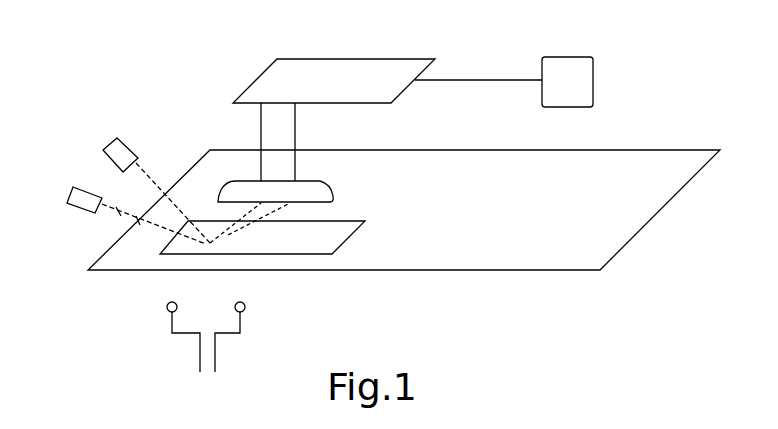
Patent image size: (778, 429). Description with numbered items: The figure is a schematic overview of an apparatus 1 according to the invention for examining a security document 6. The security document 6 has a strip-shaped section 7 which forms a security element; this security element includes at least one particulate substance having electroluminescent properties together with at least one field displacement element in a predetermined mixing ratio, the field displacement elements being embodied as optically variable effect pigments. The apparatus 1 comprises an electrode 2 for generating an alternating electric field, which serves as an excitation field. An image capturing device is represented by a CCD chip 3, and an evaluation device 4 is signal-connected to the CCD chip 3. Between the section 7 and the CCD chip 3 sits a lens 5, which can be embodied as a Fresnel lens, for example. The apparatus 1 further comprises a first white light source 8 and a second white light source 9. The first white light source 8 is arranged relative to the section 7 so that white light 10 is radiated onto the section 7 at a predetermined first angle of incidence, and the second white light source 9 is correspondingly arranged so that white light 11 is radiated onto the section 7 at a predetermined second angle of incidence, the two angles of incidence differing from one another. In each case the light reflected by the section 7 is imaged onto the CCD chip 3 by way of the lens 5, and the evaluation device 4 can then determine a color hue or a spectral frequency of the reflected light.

The apparatus 1 is at (105, 297).
The electrode 2 is at (217, 355).
The CCD chip 3 is at (403, 57).
The evaluation device 4 is at (594, 72).
The lens 5 is at (333, 190).
The security document 6 is at (600, 270).
The strip-shaped section 7 is at (355, 236).
The first white light source 8 is at (108, 142).
The second white light source 9 is at (73, 191).
The white light 10 is at (149, 177).
The white light 11 is at (118, 213).